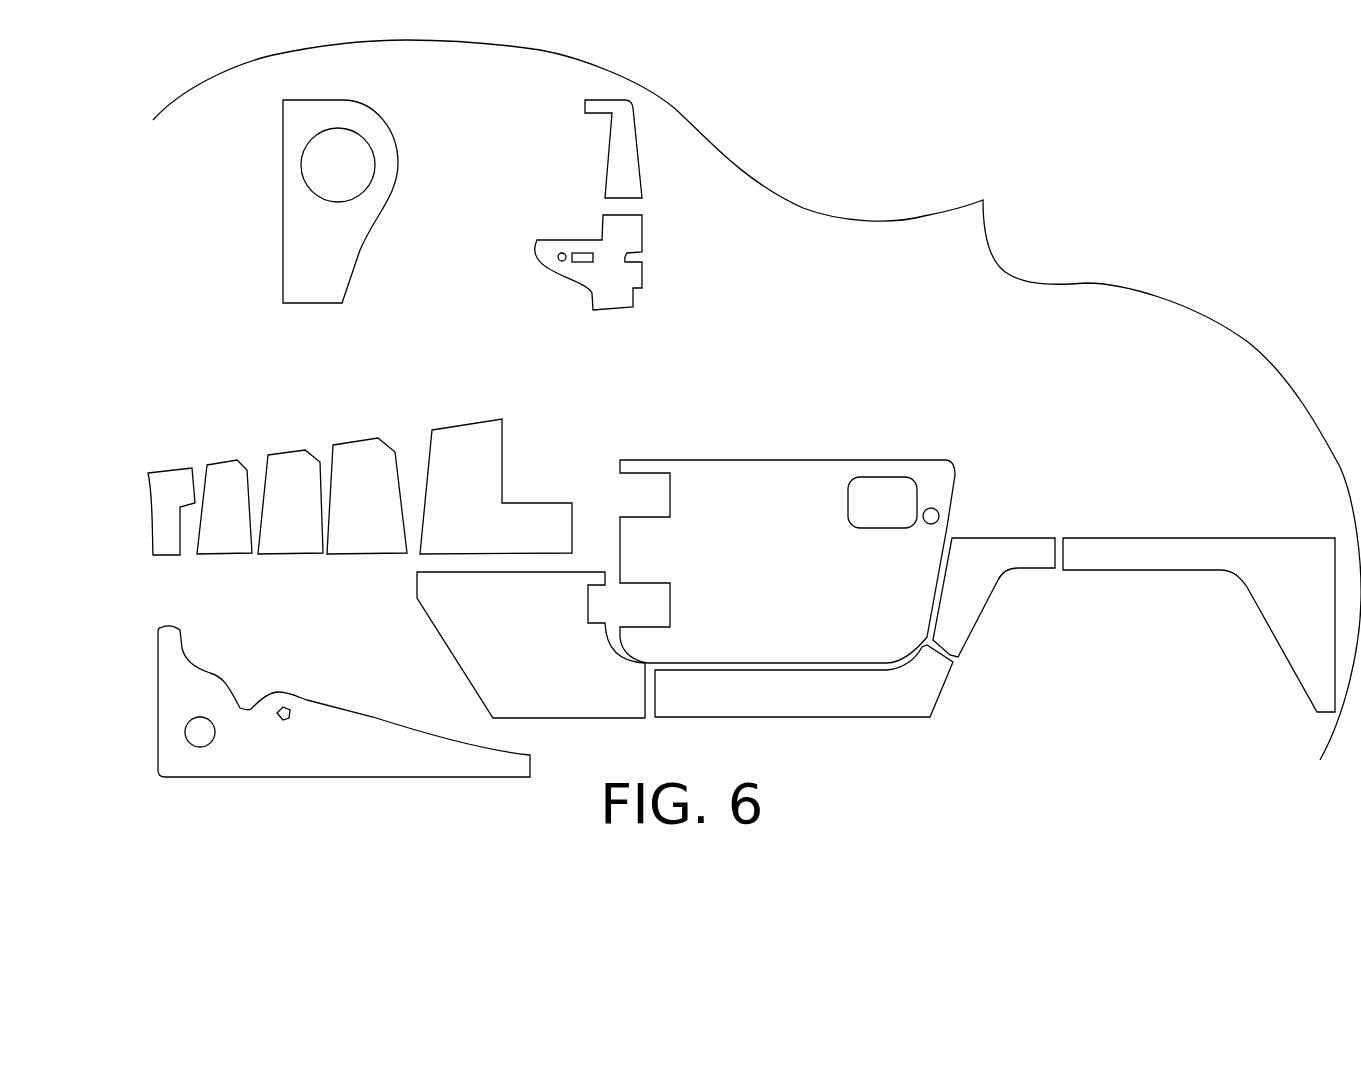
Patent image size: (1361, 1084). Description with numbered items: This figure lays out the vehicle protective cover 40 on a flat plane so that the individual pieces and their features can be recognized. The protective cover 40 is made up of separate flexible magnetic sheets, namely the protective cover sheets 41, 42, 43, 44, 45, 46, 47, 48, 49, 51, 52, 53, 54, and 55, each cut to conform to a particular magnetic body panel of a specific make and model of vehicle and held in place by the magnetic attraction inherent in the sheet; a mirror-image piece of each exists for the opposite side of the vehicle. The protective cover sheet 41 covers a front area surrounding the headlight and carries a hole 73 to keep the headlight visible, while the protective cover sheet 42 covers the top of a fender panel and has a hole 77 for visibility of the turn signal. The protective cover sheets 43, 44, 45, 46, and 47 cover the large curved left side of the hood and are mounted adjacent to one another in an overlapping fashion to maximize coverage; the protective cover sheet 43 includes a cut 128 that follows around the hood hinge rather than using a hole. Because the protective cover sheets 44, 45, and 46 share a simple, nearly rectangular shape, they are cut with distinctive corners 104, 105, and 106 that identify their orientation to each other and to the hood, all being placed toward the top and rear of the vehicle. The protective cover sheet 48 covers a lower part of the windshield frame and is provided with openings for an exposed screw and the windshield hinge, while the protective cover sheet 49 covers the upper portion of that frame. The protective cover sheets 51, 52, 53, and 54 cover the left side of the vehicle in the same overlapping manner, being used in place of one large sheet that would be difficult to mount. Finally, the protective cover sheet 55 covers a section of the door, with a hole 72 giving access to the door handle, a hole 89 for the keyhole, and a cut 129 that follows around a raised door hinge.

The protective cover 40 is at (757, 400).
The protective cover sheet 41 is at (303, 258).
The protective cover sheet 42 is at (322, 722).
The protective cover sheet 43 is at (167, 548).
The protective cover sheet 44 is at (230, 543).
The protective cover sheet 45 is at (285, 542).
The protective cover sheet 46 is at (347, 542).
The protective cover sheet 47 is at (467, 447).
The protective cover sheet 48 is at (600, 287).
The protective cover sheet 49 is at (622, 138).
The protective cover sheet 51 is at (493, 668).
The protective cover sheet 52 is at (888, 695).
The protective cover sheet 53 is at (982, 568).
The protective cover sheet 54 is at (1203, 556).
The protective cover sheet 55 is at (727, 480).
The hole 72 is at (878, 477).
The hole 73 is at (301, 162).
The hole 77 is at (198, 747).
The hole 89 is at (940, 513).
The corner 104 is at (245, 462).
The corner 105 is at (313, 452).
The corner 106 is at (382, 438).
The cut 128 is at (180, 512).
The cut 129 is at (667, 495).